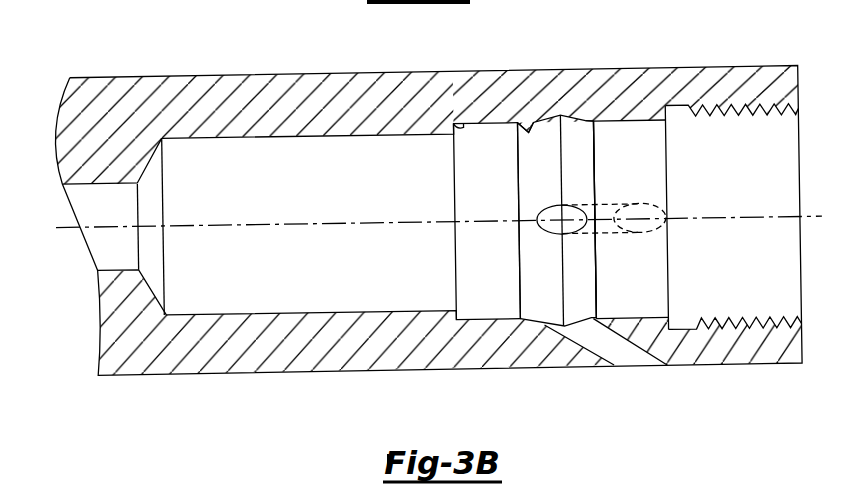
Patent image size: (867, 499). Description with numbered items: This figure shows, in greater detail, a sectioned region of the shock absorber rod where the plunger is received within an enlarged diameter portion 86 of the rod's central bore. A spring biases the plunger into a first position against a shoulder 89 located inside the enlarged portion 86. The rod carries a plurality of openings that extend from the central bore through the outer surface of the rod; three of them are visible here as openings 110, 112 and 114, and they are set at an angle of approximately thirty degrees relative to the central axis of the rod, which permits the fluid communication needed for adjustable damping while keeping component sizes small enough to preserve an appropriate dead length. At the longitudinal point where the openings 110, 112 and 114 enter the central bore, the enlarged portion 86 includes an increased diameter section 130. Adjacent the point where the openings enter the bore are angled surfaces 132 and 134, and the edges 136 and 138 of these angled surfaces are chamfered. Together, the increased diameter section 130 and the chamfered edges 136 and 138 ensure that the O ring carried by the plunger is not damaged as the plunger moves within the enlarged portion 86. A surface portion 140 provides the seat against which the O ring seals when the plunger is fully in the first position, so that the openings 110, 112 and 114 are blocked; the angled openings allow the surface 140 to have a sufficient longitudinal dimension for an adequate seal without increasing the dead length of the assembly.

The enlarged diameter portion 86 is at (299, 300).
The shoulder 89 is at (465, 124).
The opening 110 is at (619, 72).
The opening 112 is at (622, 360).
The opening 114 is at (538, 219).
The increased diameter section 130 is at (531, 215).
The angled surface 132 is at (588, 305).
The angled surface 134 is at (530, 134).
The chamfered edge 136 is at (619, 219).
The chamfered edge 138 is at (519, 124).
The surface portion 140 is at (646, 124).